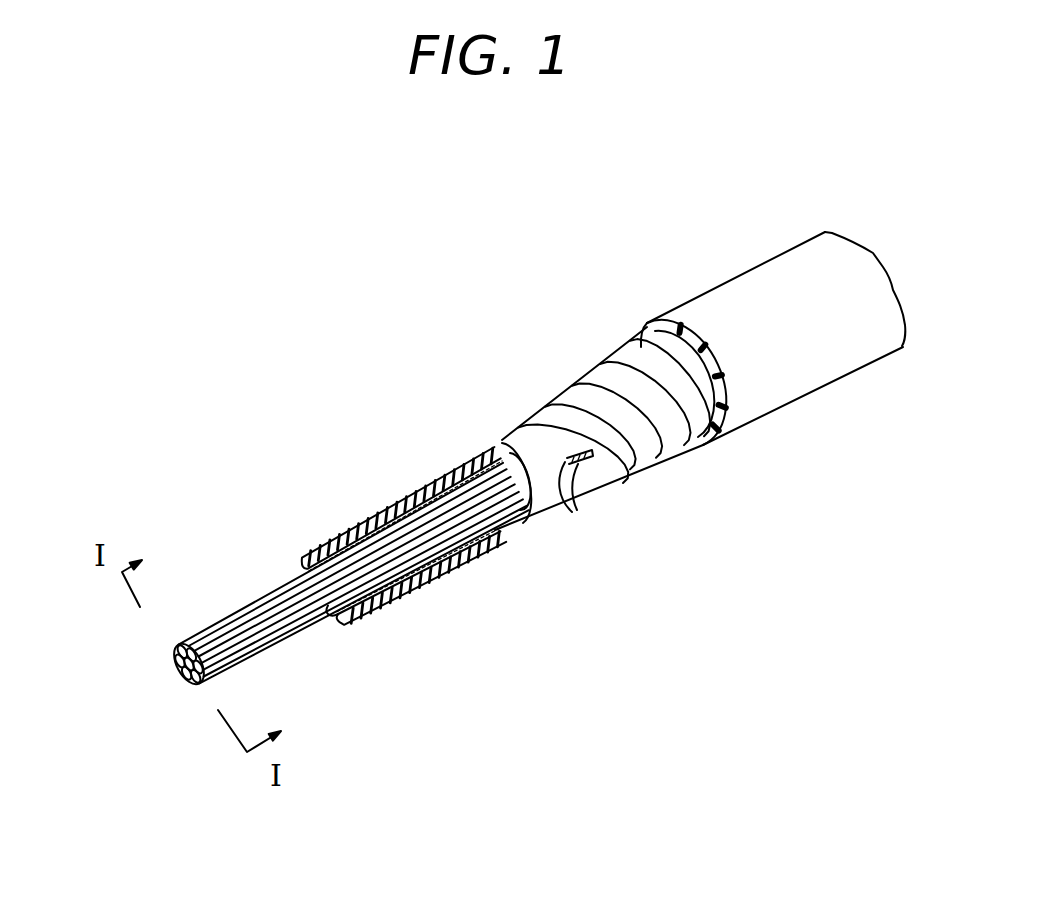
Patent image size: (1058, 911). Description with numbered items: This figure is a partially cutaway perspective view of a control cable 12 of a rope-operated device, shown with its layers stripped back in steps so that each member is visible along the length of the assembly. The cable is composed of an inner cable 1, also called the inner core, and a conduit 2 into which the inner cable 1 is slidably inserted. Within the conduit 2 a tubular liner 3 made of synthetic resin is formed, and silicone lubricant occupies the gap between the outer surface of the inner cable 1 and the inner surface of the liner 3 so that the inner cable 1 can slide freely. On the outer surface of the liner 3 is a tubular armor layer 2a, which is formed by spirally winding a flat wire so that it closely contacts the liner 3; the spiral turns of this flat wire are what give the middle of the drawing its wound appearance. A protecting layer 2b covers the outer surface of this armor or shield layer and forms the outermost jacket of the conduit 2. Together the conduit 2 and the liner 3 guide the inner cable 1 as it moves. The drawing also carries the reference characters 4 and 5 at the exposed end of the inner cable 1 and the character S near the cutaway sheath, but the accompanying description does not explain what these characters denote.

The inner cable 1 is at (262, 648).
The conduit 2 is at (697, 247).
The armor layer 2a is at (589, 488).
The protecting layer 2b is at (779, 394).
The liner 3 is at (432, 573).
The outer wires 4 is at (193, 690).
The core wire 5 is at (185, 646).
The control cable 12 is at (588, 711).
The gap of tape sheath S is at (408, 497).